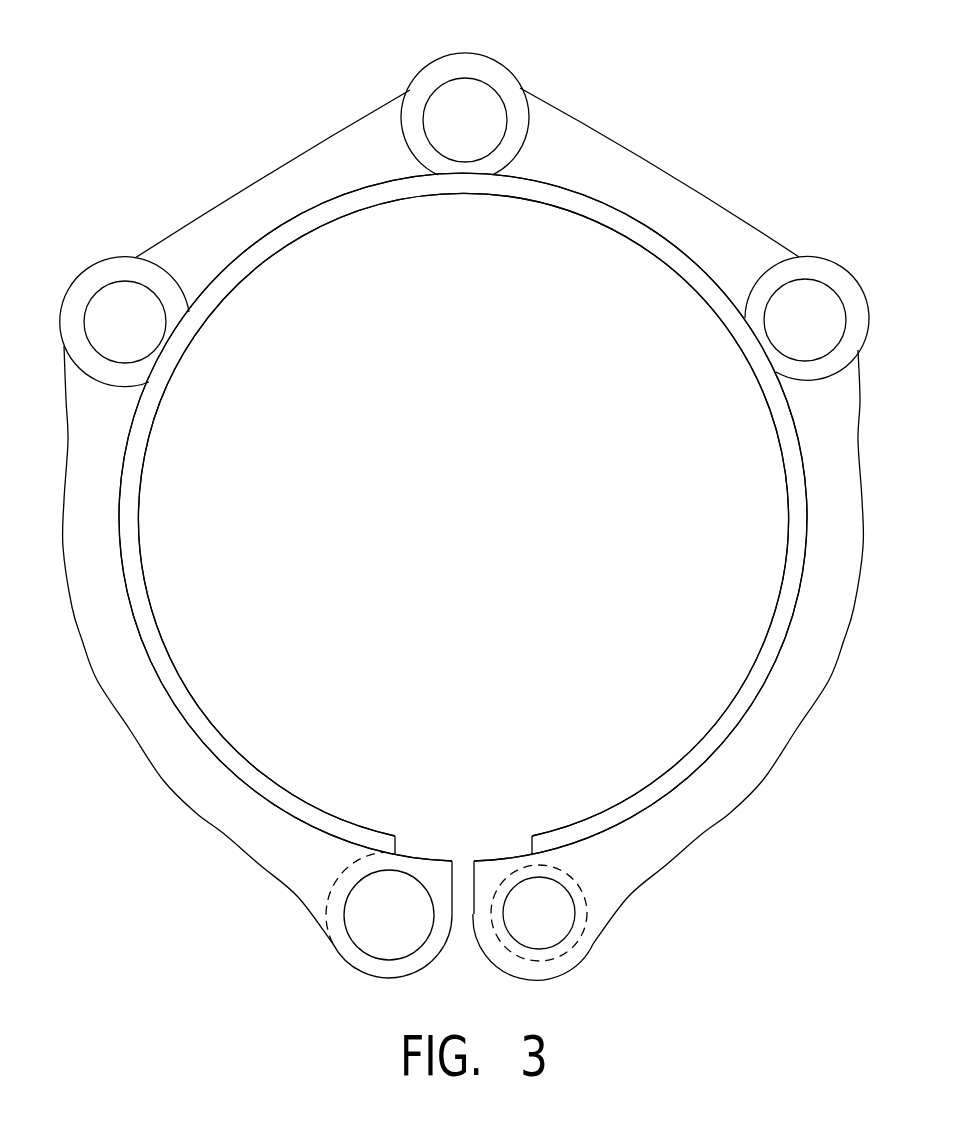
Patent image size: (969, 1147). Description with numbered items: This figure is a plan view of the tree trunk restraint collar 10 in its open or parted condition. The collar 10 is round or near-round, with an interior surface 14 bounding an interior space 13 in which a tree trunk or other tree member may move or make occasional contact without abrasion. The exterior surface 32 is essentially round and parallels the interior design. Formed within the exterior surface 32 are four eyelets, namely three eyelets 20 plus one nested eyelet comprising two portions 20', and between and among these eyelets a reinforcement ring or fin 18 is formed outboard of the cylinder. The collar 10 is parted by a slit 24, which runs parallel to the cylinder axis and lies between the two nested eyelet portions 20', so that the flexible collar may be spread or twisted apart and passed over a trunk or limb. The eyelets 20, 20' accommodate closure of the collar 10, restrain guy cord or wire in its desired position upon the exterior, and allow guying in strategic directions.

The collar 10 is at (203, 123).
The interior space 13 is at (757, 558).
The interior surface 14 is at (784, 458).
The reinforcement ring or fin 18 is at (627, 165).
The eyelets 20 is at (450, 196).
The nested eyelet portions 20' is at (489, 929).
The slit 24 is at (464, 923).
The exterior surface 32 is at (122, 542).